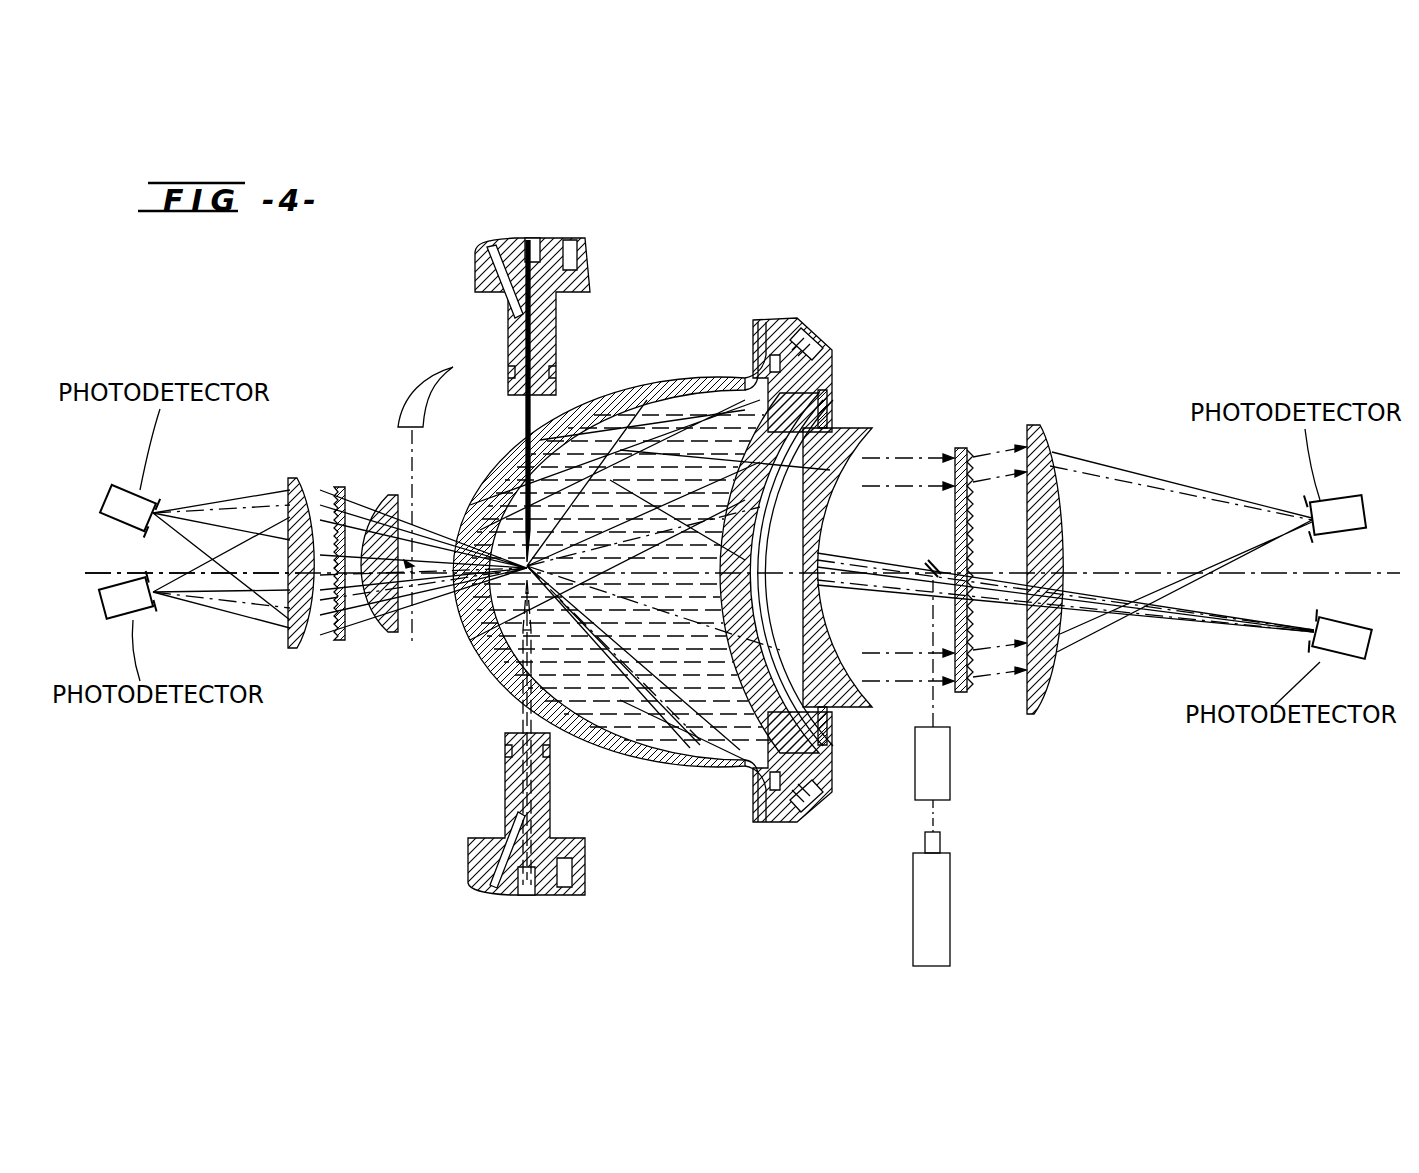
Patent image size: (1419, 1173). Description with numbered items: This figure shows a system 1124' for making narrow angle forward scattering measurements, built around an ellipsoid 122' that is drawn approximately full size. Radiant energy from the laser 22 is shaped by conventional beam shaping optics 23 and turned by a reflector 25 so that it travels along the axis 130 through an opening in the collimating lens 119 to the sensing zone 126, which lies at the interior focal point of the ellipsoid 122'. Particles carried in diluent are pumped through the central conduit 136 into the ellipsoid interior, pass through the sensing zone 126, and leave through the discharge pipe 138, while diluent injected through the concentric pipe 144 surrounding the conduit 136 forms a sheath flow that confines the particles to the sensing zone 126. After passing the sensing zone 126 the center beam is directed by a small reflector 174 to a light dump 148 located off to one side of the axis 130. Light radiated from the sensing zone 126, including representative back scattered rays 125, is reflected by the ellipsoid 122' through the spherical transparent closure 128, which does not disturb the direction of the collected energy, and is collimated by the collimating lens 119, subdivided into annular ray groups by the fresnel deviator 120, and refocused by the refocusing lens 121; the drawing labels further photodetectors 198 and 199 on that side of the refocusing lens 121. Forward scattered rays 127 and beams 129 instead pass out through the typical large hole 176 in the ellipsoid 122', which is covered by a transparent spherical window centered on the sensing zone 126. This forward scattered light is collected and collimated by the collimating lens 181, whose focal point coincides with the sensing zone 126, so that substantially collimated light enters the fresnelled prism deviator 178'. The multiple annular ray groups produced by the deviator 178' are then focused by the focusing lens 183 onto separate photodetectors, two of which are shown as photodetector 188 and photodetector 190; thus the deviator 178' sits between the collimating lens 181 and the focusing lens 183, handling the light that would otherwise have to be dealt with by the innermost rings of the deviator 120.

The system 1124' is at (739, 564).
The back scattered rays 125 is at (622, 455).
The sensing zone 126 is at (500, 500).
The forward scattered rays 127 is at (622, 590).
The spherical transparent closure 128 is at (760, 642).
The beams 129 is at (425, 592).
The axis 130 is at (142, 570).
The central conduit 136 is at (548, 812).
The discharge pipe 138 is at (530, 433).
The concentric pipe 144 is at (520, 700).
The light dump 148 is at (402, 420).
The small reflector 174 is at (414, 598).
The large hole 176 is at (463, 545).
The fresnelled prism deviator 178' is at (339, 586).
The collimating lens 181 is at (386, 494).
The focusing lens 183 is at (306, 478).
The photodetector 188 is at (122, 490).
The photodetector 190 is at (122, 618).
The photodetector 198 is at (1330, 500).
The photodetector 199 is at (1325, 656).
The collimating lens 119 is at (845, 426).
The fresnel deviator 120 is at (958, 446).
The refocusing lens 121 is at (1030, 426).
The ellipsoid 122' is at (682, 748).
The laser 22 is at (951, 886).
The beam shaping optics 23 is at (950, 777).
The reflector 25 is at (936, 565).